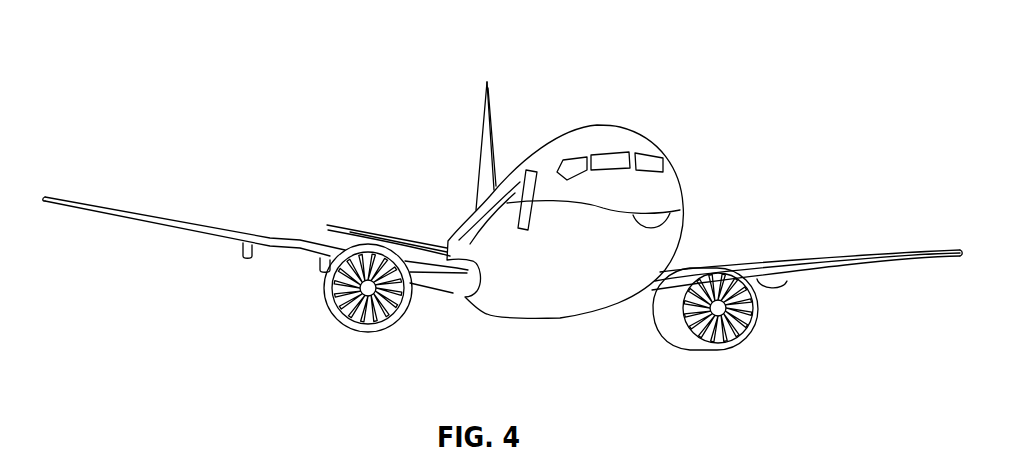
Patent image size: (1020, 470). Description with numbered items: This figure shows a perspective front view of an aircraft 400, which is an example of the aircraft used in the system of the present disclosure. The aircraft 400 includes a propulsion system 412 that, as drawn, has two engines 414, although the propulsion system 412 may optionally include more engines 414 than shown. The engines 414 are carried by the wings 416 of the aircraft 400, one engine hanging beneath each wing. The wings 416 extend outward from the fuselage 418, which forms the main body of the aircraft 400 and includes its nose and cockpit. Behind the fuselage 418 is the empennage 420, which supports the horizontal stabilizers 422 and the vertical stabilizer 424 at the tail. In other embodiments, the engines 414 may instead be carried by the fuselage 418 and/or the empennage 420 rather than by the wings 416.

The aircraft 400 is at (277, 59).
The propulsion system 412 is at (792, 340).
The engines 414 is at (367, 332).
The wings 416 is at (167, 220).
The fuselage 418 is at (682, 185).
The empennage 420 is at (475, 212).
The horizontal stabilizers 422 is at (360, 227).
The vertical stabilizer 424 is at (483, 117).